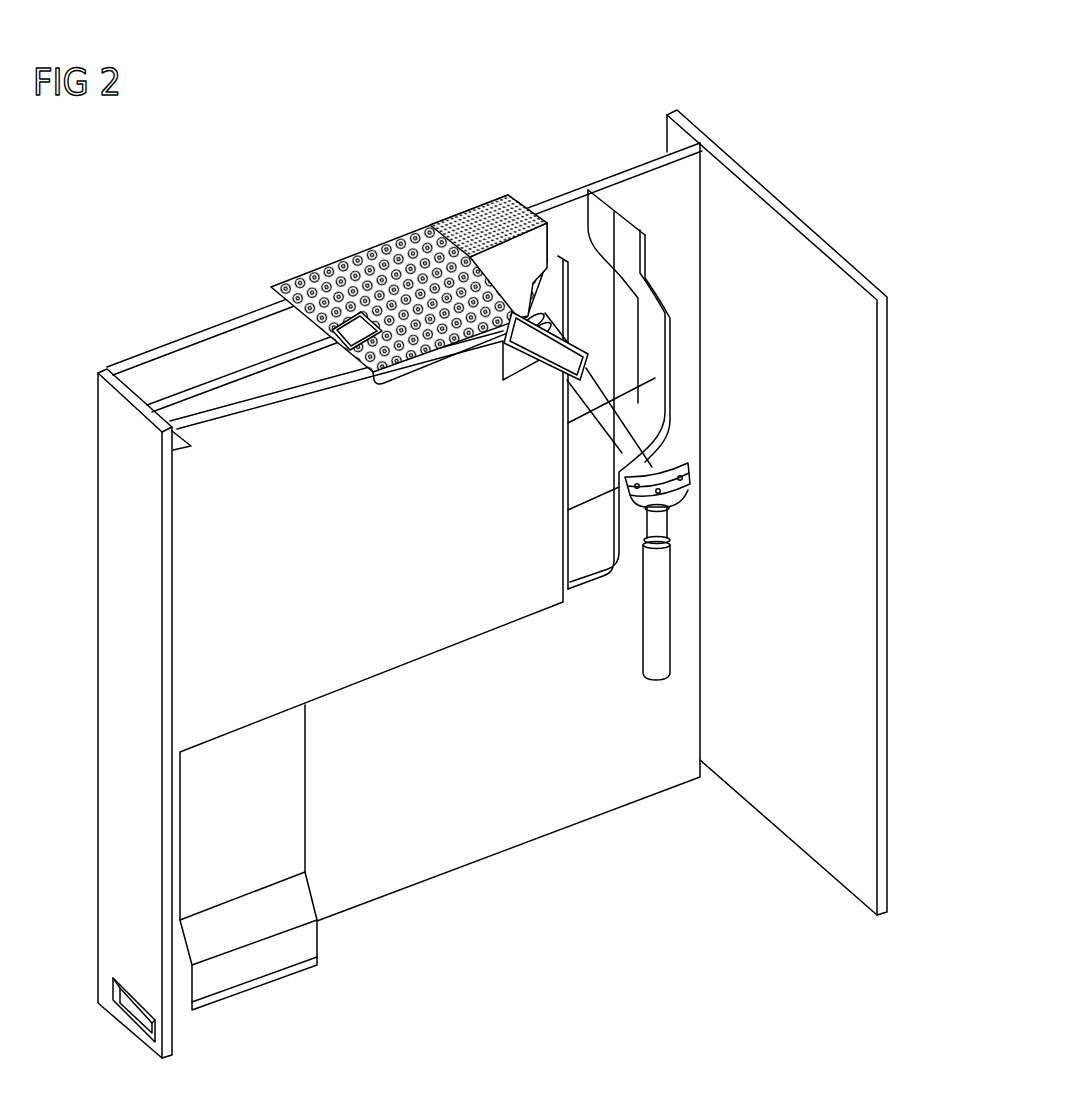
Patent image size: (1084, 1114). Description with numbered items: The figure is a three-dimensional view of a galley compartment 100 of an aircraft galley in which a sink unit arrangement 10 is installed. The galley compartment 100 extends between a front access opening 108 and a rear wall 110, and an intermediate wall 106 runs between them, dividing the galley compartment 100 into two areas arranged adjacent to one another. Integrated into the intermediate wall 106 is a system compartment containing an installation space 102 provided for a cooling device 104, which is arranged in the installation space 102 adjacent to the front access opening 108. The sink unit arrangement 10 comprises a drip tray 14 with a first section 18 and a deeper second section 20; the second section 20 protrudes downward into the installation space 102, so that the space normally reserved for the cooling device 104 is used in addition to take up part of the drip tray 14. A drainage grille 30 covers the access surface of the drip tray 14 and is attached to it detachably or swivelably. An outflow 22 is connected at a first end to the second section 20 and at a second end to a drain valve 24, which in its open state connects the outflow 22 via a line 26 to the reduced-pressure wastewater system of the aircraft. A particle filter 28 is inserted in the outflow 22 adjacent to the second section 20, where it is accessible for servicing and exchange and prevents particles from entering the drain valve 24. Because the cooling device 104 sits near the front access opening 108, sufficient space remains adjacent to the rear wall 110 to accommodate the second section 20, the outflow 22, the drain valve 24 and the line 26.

The galley compartment 100 is at (800, 140).
The installation space 102 is at (408, 708).
The cooling device 104 is at (190, 572).
The intermediate wall 106 is at (172, 378).
The front access opening 108 is at (130, 720).
The rear wall 110 is at (865, 561).
The sink unit arrangement 10 is at (455, 200).
The drip tray 14 is at (292, 276).
The first section 18 is at (447, 360).
The second section 20 is at (515, 250).
The outflow 22 is at (590, 400).
The drain valve 24 is at (667, 455).
The line 26 is at (668, 613).
The particle filter 28 is at (535, 317).
The drainage grille 30 is at (364, 263).